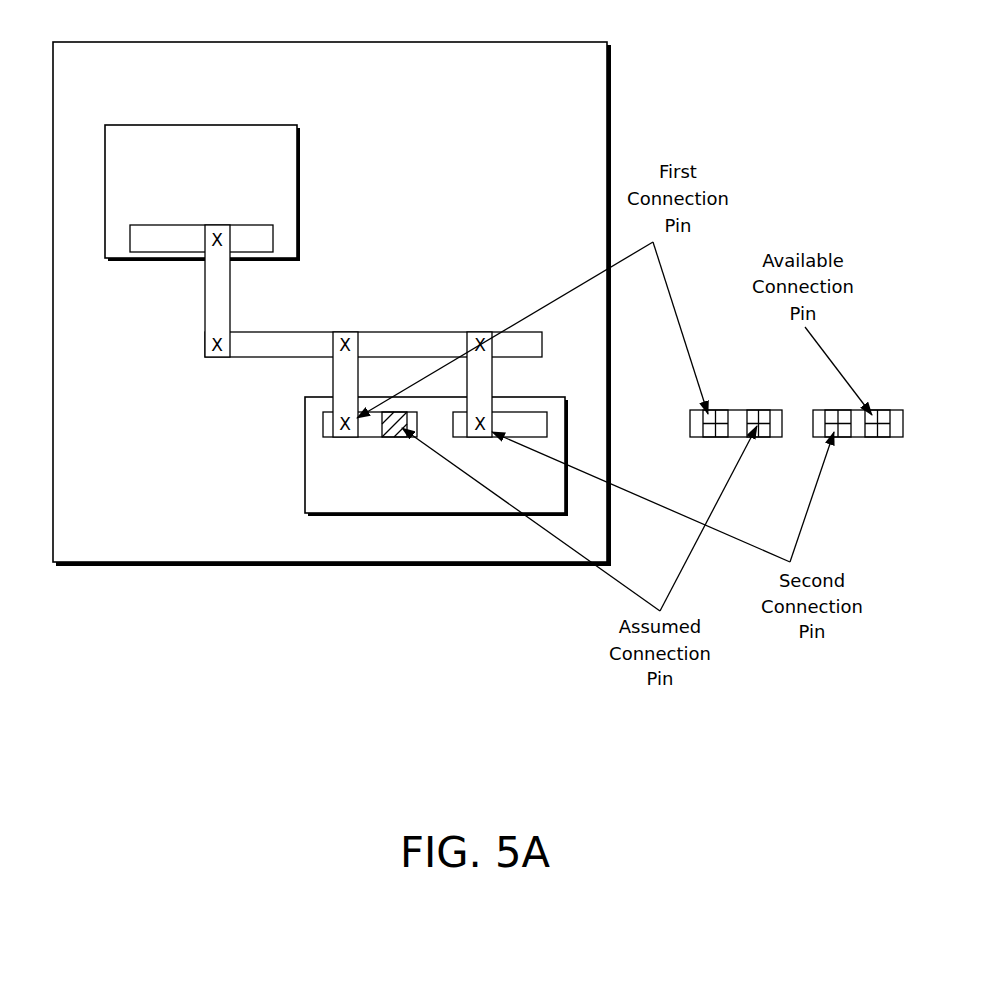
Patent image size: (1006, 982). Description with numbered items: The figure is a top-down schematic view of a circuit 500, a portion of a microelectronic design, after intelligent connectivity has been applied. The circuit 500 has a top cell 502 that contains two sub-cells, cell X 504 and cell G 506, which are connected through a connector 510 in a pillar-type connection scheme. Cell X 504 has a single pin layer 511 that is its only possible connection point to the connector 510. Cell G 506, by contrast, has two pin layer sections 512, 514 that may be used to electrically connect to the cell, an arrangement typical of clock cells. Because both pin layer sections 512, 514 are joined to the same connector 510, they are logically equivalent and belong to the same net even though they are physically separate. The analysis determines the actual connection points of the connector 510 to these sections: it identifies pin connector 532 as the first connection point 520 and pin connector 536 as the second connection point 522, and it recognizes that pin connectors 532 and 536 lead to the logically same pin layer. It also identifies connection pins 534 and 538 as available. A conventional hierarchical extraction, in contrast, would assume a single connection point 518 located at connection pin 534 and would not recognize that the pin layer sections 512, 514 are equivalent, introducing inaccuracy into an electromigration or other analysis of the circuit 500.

The circuit 500 is at (747, 107).
The top cell 502 is at (332, 304).
The cell X 504 is at (202, 193).
The cell G 506 is at (436, 456).
The connector 510 is at (218, 300).
The pin layer 511 is at (257, 243).
The pin layer section 512 is at (372, 433).
The pin layer section 514 is at (525, 430).
The assumed single connection point 518 is at (390, 430).
The first connection point 520 is at (340, 428).
The second connection point 522 is at (478, 421).
The pin connector 532 is at (712, 437).
The connection pin 534 is at (760, 437).
The pin connector 536 is at (845, 437).
The connection pin 538 is at (883, 437).